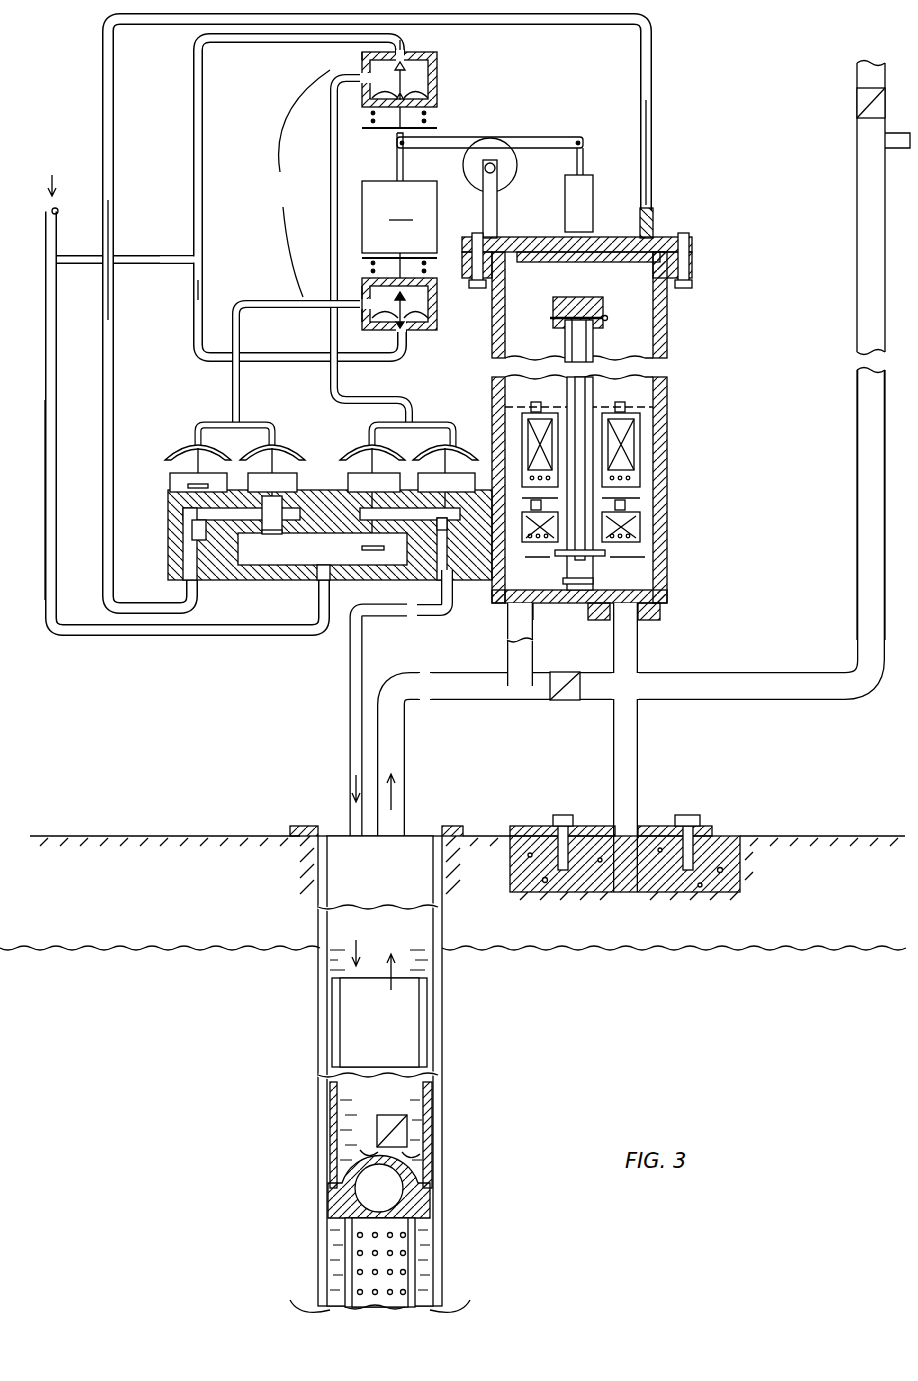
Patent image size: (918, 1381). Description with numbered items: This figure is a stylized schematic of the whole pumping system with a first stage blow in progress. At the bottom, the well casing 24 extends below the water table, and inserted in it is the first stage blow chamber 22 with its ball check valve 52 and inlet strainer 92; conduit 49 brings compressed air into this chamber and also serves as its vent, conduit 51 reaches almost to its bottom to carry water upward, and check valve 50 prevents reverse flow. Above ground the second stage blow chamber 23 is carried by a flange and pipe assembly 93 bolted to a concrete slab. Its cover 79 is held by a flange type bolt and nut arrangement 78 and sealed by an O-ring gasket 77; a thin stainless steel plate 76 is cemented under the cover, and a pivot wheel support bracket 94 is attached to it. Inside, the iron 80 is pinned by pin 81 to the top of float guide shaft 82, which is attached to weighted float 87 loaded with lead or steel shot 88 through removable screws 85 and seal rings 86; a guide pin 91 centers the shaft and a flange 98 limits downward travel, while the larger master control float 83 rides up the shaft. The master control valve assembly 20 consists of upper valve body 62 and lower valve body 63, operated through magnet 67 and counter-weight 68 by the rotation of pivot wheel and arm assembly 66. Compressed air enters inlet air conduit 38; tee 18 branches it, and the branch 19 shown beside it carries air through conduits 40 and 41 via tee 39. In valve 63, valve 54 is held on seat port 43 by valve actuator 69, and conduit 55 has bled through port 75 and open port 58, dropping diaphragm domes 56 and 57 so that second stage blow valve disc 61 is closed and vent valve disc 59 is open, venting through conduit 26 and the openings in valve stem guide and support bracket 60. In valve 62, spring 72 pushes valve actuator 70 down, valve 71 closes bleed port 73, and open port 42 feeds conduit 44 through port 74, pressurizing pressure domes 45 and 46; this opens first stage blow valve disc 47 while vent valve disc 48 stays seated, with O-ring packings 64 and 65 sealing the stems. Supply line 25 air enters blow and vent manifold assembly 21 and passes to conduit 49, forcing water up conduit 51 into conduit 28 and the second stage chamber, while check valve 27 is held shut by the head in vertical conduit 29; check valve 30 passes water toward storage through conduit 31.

The tee 18 is at (62, 258).
The pipe 19 is at (115, 256).
The master control valve assembly 20 is at (300, 183).
The blow and vent manifold assembly 21 is at (308, 490).
The first stage blow chamber 22 is at (433, 1108).
The second stage blow chamber 23 is at (667, 392).
The well casing 24 is at (442, 1022).
The supply line 25 is at (45, 495).
The conduit 26 is at (653, 74).
The check valve 27 is at (568, 700).
The conduit 28 is at (507, 636).
The vertical conduit 29 is at (857, 495).
The check valve 30 is at (857, 100).
The conduit 31 is at (903, 150).
The inlet air conduit 38 is at (168, 402).
The tee 39 is at (190, 256).
The conduit 40 is at (114, 128).
The conduit 41 is at (203, 264).
The port 42 is at (410, 53).
The seat port 43 is at (403, 335).
The conduit 44 is at (330, 131).
The pressure dome 45 is at (358, 454).
The pressure dome 46 is at (458, 452).
The first stage blow valve disc 47 is at (362, 548).
The vent valve disc 48 is at (458, 512).
The conduit 49 is at (362, 650).
The check valve 50 is at (410, 1140).
The conduit 51 is at (405, 772).
The ball check valve 52 is at (405, 1182).
The valve 54 is at (408, 322).
The conduit 55 is at (254, 301).
The diaphragm dome 56 is at (182, 456).
The diaphragm dome 57 is at (283, 450).
The port 58 is at (404, 262).
The vent valve disc 59 is at (188, 492).
The valve stem guide and support bracket 60 is at (168, 476).
The second stage blow valve disc 61 is at (275, 536).
The upper valve body 62 is at (425, 78).
The lower valve body 63 is at (422, 315).
The O-ring packing 64 is at (350, 508).
The O-ring packing 65 is at (270, 500).
The pivot wheel and arm assembly 66 is at (530, 137).
The magnet 67 is at (588, 182).
The counter-weight 68 is at (399, 217).
The valve actuator 69 is at (362, 258).
The valve actuator 70 is at (440, 125).
The valve 71 is at (418, 92).
The spring 72 is at (428, 116).
The bleed port 73 is at (388, 119).
The port 74 is at (362, 62).
The port 75 is at (362, 320).
The stainless steel plate 76 is at (537, 262).
The O-ring gasket 77 is at (667, 288).
The flange type bolt and nut arrangement 78 is at (683, 234).
The second stage blow chamber cover 79 is at (480, 240).
The iron 80 is at (583, 298).
The pin 81 is at (604, 316).
The float guide shaft 82 is at (596, 340).
The master control float 83 is at (640, 438).
The removable screw 85 is at (628, 505).
The seal ring 86 is at (640, 522).
The weighted float 87 is at (555, 553).
The lead or steel shot 88 is at (640, 540).
The guide pin 91 is at (600, 572).
The inlet strainer 92 is at (415, 1285).
The flange and pipe assembly 93 is at (638, 772).
The pivot wheel support bracket 94 is at (498, 203).
The flange 98 is at (545, 590).